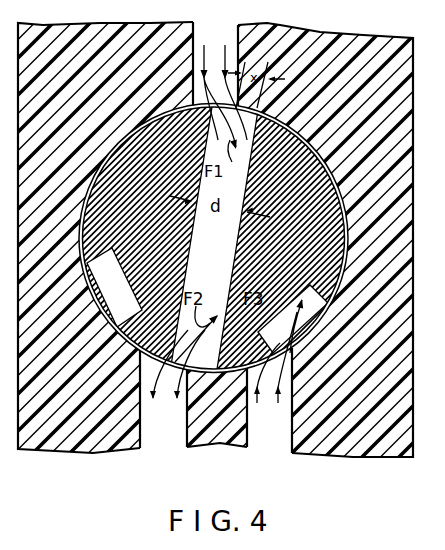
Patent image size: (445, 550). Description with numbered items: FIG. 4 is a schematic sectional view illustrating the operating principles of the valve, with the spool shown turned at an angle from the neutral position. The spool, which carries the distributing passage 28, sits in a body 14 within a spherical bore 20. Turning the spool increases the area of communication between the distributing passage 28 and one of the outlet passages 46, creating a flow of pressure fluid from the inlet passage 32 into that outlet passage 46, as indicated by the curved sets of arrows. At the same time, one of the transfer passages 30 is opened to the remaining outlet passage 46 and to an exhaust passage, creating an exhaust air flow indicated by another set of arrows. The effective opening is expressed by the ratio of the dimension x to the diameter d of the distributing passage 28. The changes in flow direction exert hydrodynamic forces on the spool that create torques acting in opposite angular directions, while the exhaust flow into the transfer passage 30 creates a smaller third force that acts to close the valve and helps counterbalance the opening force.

The valve body 14 is at (222, 247).
The spherical bore 20 is at (222, 291).
The distributing passage 28 is at (222, 291).
The transfer passage 30 is at (114, 326).
The inlet passage 32 is at (203, 32).
The outlet passage 46 is at (157, 423).